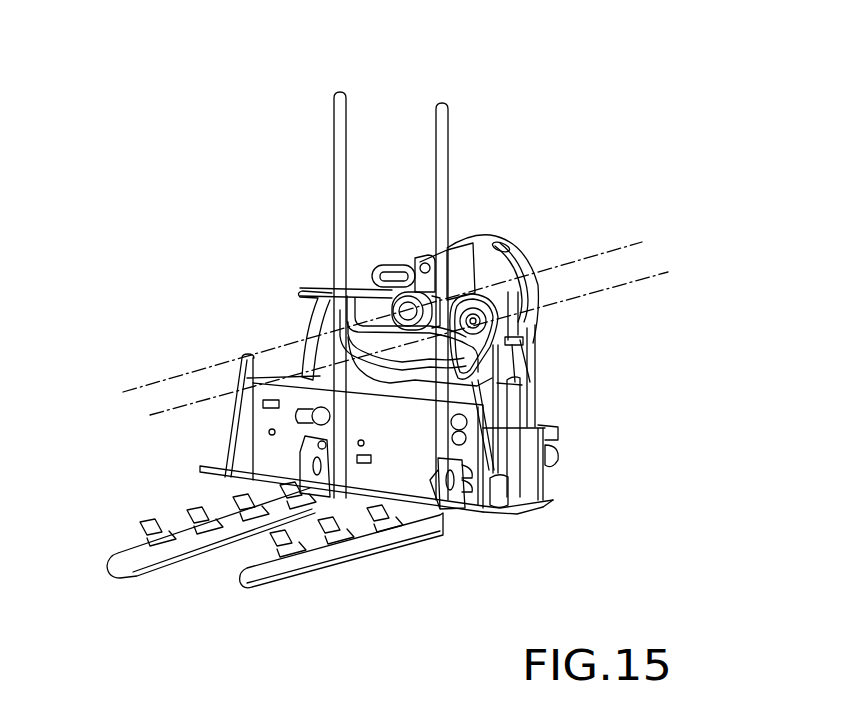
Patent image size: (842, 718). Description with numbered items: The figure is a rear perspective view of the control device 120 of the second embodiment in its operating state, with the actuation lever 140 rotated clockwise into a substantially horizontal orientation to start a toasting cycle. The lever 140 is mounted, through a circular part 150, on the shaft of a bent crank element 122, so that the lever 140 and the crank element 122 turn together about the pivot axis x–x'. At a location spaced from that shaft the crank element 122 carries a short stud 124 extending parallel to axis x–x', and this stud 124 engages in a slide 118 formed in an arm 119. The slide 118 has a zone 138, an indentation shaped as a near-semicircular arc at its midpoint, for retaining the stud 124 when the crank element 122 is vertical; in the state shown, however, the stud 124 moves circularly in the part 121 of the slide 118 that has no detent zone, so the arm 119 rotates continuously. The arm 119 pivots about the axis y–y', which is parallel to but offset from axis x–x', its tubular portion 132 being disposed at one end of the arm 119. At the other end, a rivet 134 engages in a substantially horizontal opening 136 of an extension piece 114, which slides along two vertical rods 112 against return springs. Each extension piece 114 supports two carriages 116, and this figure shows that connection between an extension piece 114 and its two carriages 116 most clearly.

The vertical rods 112 is at (440, 130).
The extension piece 114 is at (280, 455).
The carriages 116 is at (278, 582).
The slide 118 is at (462, 358).
The arm 119 is at (470, 349).
The device 120 is at (532, 256).
The part of slide 121 is at (445, 505).
The bent crank element 122 is at (368, 295).
The stud 124 is at (347, 308).
The tubular portion 132 is at (500, 324).
The rivet 134 is at (326, 475).
The opening 136 is at (548, 502).
The zone 138 is at (468, 421).
The actuation lever 140 is at (398, 265).
The circular part 150 is at (458, 432).
The pivot axis x is at (397, 302).
The pivot axis x' is at (111, 385).
The axis y is at (425, 331).
The axis y' is at (135, 426).